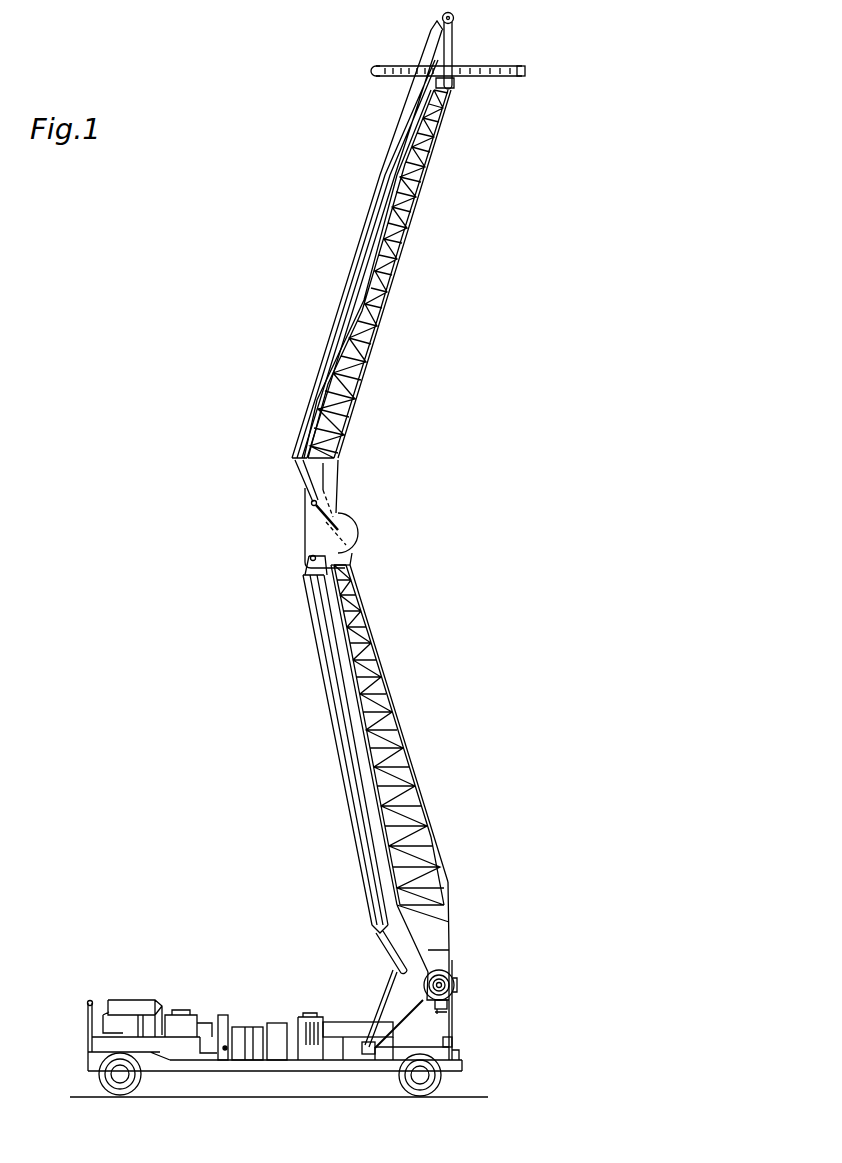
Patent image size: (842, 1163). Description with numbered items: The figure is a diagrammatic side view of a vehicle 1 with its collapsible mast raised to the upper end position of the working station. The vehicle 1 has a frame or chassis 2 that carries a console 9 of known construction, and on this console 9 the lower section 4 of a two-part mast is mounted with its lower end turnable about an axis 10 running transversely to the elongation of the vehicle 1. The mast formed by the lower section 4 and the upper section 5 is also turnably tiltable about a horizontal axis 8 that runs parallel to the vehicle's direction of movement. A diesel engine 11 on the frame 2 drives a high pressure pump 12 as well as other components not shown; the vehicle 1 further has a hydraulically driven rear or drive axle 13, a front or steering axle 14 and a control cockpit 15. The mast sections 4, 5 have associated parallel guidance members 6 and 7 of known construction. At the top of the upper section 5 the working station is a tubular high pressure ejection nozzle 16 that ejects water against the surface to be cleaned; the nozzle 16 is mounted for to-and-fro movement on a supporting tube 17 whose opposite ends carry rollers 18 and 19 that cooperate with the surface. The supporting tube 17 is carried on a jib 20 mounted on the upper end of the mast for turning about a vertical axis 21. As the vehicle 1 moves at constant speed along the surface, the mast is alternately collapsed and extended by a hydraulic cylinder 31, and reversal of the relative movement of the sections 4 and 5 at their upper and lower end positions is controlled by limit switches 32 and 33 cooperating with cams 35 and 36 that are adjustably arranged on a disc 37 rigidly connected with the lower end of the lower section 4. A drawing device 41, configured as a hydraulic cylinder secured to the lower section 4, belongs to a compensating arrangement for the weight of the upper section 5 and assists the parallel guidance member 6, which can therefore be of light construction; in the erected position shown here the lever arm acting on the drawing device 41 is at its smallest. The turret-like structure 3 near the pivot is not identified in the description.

The vehicle 1 is at (288, 1043).
The frame or chassis 2 is at (325, 1066).
The turret 3 is at (447, 960).
The lower section 4 is at (385, 697).
The upper section 5 is at (393, 298).
The parallel guidance member 6 is at (342, 777).
The parallel guidance member 7 is at (318, 345).
The horizontal axis 8 is at (457, 1052).
The console 9 is at (397, 1042).
The axis 10 is at (453, 977).
The diesel engine 11 is at (350, 1036).
The high pressure pump 12 is at (248, 1030).
The rear or drive axle 13 is at (440, 1084).
The front or steering axle 14 is at (117, 1084).
The control cockpit 15 is at (133, 1000).
The high pressure ejection nozzle 16 is at (504, 74).
The supporting tube 17 is at (401, 66).
The roller 18 is at (525, 76).
The roller 19 is at (373, 80).
The jib 20 is at (401, 78).
The vertical axis 21 is at (455, 43).
The hydraulic cylinder 31 is at (392, 983).
The limit switch 32 is at (453, 1040).
The limit switch 33 is at (449, 1010).
The cam 35 is at (405, 1008).
The cam 36 is at (452, 998).
The disc 37 is at (459, 983).
The drawing device 41 is at (332, 634).